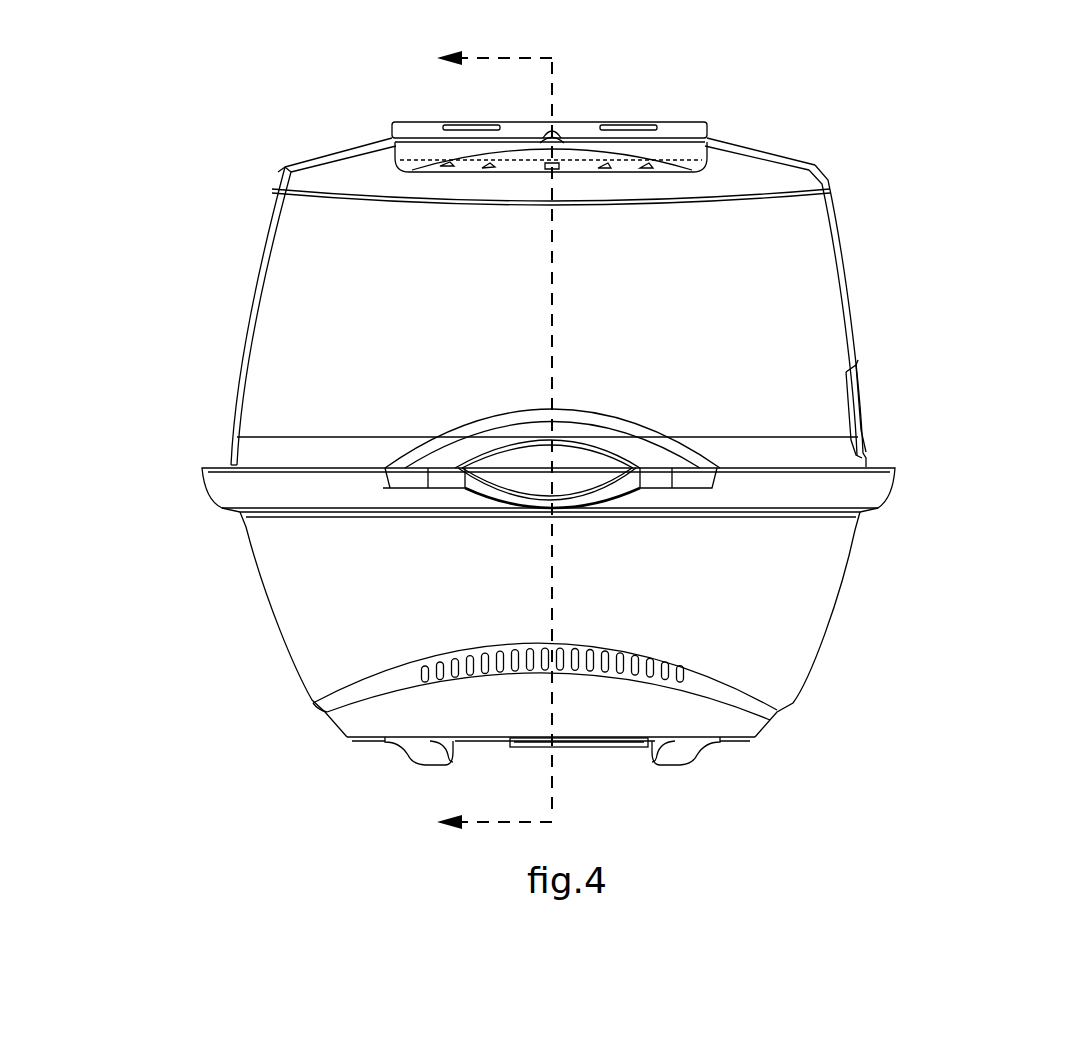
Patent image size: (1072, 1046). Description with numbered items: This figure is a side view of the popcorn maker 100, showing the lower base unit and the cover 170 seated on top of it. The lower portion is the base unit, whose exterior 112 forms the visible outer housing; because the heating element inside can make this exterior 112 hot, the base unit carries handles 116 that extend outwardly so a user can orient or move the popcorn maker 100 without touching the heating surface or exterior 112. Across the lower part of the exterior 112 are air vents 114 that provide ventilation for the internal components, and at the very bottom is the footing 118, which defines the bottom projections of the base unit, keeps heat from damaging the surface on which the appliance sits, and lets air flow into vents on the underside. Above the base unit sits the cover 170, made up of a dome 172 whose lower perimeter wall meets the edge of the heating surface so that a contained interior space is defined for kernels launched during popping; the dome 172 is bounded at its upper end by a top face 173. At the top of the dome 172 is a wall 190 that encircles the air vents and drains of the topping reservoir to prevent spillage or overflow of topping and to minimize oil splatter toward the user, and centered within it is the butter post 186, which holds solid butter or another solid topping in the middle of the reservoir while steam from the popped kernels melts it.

The popcorn maker 100 is at (213, 258).
The exterior 112 is at (273, 634).
The air vents 114 is at (348, 698).
The handles 116 is at (480, 493).
The footing 118 is at (663, 768).
The cover 170 is at (860, 349).
The dome 172 is at (846, 255).
The top face 173 is at (327, 155).
The butter post 186 is at (552, 128).
The wall 190 is at (705, 125).